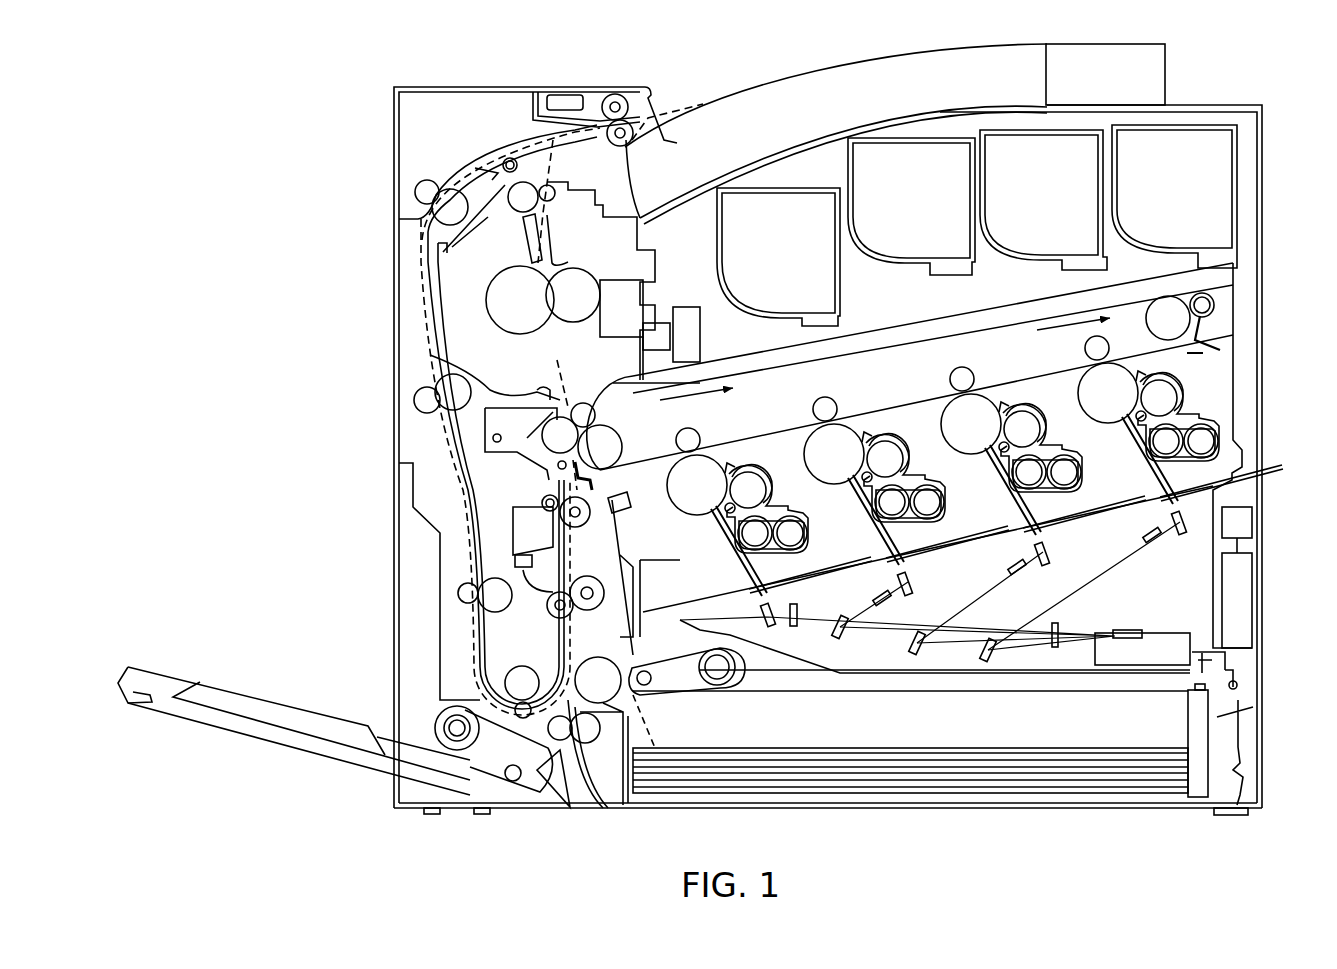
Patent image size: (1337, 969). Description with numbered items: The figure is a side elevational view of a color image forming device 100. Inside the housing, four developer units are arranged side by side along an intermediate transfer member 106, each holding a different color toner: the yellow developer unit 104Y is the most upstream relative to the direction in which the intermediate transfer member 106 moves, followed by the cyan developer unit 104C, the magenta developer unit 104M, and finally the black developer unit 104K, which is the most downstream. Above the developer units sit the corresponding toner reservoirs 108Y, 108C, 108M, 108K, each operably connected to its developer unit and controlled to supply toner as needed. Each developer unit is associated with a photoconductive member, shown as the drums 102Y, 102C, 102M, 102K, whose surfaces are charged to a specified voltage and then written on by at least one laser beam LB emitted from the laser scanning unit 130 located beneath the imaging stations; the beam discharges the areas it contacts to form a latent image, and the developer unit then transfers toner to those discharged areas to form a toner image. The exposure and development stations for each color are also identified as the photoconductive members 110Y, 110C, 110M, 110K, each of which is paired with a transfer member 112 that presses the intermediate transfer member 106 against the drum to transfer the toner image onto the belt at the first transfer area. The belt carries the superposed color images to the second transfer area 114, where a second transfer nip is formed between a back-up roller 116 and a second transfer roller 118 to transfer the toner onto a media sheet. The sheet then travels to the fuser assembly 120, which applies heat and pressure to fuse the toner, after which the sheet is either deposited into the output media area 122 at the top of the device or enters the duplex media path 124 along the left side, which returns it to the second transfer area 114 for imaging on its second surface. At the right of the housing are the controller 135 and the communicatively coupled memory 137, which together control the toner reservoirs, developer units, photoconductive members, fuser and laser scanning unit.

The color image forming device 100 is at (320, 100).
The black photoconductive member 102K is at (667, 462).
The magenta photoconductive member 102M is at (797, 443).
The cyan photoconductive member 102C is at (933, 412).
The yellow photoconductive member 102Y is at (1068, 390).
The black developer unit 104K is at (748, 455).
The magenta developer unit 104M is at (882, 420).
The cyan developer unit 104C is at (1017, 390).
The yellow developer unit 104Y is at (1215, 388).
The intermediate transfer member 106 is at (1005, 325).
The black toner reservoir 108K is at (778, 257).
The magenta toner reservoir 108M is at (911, 206).
The cyan toner reservoir 108C is at (1043, 200).
The yellow toner reservoir 108Y is at (1174, 196).
The black photoconductive member 110K is at (698, 505).
The magenta photoconductive member 110M is at (830, 478).
The cyan photoconductive member 110C is at (965, 440).
The yellow photoconductive member 110Y is at (1098, 413).
The transfer member 112 is at (675, 450).
The second transfer area 114 is at (537, 485).
The back-up roller 116 is at (620, 425).
The second transfer roller 118 is at (547, 430).
The fuser assembly 120 is at (523, 257).
The output media area 122 is at (762, 123).
The duplex media path 124 is at (410, 337).
The laser scanning unit 130 is at (935, 600).
The controller 135 is at (1243, 588).
The memory 137 is at (1243, 525).
The laser beam LB is at (807, 611).